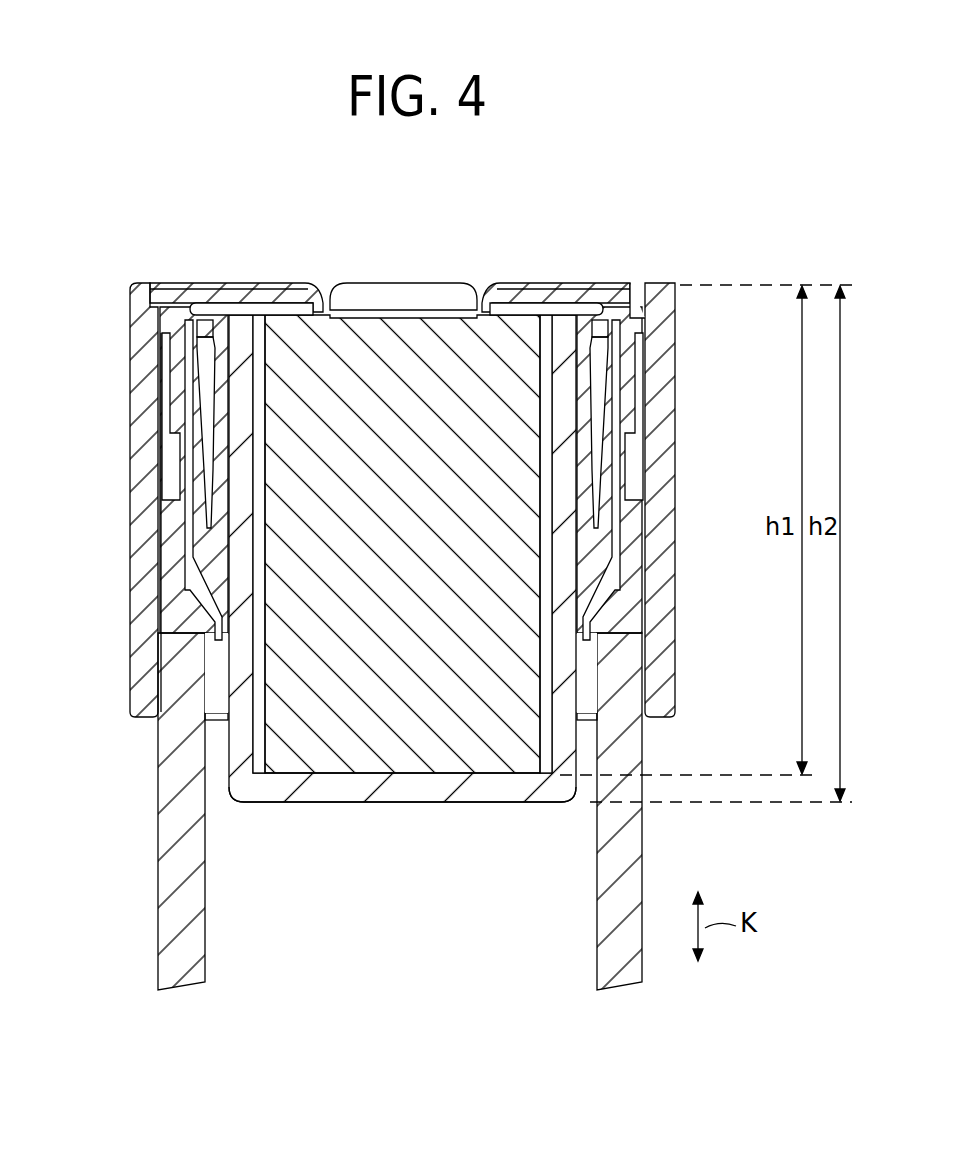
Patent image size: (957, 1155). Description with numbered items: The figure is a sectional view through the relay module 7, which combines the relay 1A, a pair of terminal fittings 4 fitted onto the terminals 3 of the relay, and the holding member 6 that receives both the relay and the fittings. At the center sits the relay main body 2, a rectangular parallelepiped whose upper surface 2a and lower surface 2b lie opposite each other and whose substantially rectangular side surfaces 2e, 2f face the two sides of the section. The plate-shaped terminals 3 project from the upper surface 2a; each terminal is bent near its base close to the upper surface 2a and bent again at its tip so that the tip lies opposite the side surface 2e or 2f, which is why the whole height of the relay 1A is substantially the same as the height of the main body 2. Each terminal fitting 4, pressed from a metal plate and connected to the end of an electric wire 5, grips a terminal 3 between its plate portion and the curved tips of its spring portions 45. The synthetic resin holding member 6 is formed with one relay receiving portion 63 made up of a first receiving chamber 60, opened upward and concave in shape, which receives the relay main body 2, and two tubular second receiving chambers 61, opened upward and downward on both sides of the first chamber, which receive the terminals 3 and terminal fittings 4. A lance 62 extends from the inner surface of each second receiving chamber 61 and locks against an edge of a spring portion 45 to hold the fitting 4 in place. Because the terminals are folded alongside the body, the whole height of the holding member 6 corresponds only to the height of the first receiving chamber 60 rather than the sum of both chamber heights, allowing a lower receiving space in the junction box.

The relay module 7 is at (404, 566).
The relay 1A is at (422, 268).
The relay main body 2 is at (423, 735).
The upper surface 2a is at (390, 310).
The lower surface 2b is at (355, 792).
The side surface 2e is at (258, 683).
The side surface 2f is at (540, 683).
The terminal 3 is at (222, 300).
The terminal fitting 4 is at (158, 408).
The electric wire 5 is at (165, 833).
The holding member 6 is at (128, 660).
The spring portion 45 is at (525, 300).
The first receiving chamber 60 is at (258, 478).
The second receiving chamber 61 is at (220, 433).
The lance 62 is at (182, 480).
The relay receiving portion 63 is at (268, 295).